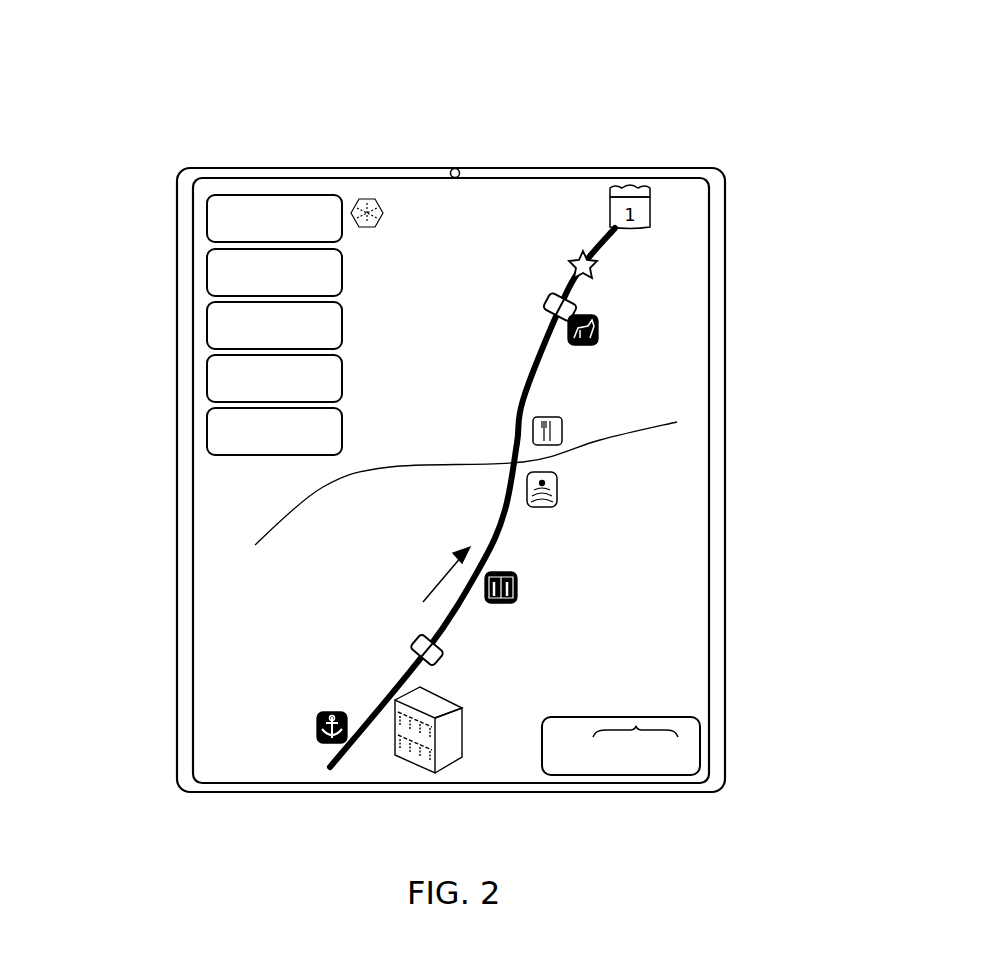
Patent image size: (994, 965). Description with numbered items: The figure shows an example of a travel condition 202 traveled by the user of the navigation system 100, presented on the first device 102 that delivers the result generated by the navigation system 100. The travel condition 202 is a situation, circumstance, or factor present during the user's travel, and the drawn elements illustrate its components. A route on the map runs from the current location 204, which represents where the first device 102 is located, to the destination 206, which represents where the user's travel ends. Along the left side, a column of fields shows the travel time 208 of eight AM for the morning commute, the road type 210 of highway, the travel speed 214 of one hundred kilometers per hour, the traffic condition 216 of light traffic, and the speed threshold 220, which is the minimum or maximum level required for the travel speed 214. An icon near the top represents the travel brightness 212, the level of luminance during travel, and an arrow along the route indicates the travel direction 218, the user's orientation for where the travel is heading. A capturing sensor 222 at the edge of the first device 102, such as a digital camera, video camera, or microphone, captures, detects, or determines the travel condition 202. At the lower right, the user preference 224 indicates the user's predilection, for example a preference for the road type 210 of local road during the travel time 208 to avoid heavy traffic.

The navigation system 100 is at (280, 57).
The first device 102 is at (645, 170).
The travel condition 202 is at (547, 193).
The current location 204 is at (417, 643).
The destination 206 is at (598, 263).
The travel time 208 is at (223, 208).
The road type 210 is at (218, 277).
The travel brightness 212 is at (368, 207).
The travel speed 214 is at (218, 333).
The traffic condition 216 is at (218, 387).
The travel direction 218 is at (470, 560).
The speed threshold 220 is at (218, 427).
The capturing sensor 222 is at (456, 168).
The user preference 224 is at (680, 742).